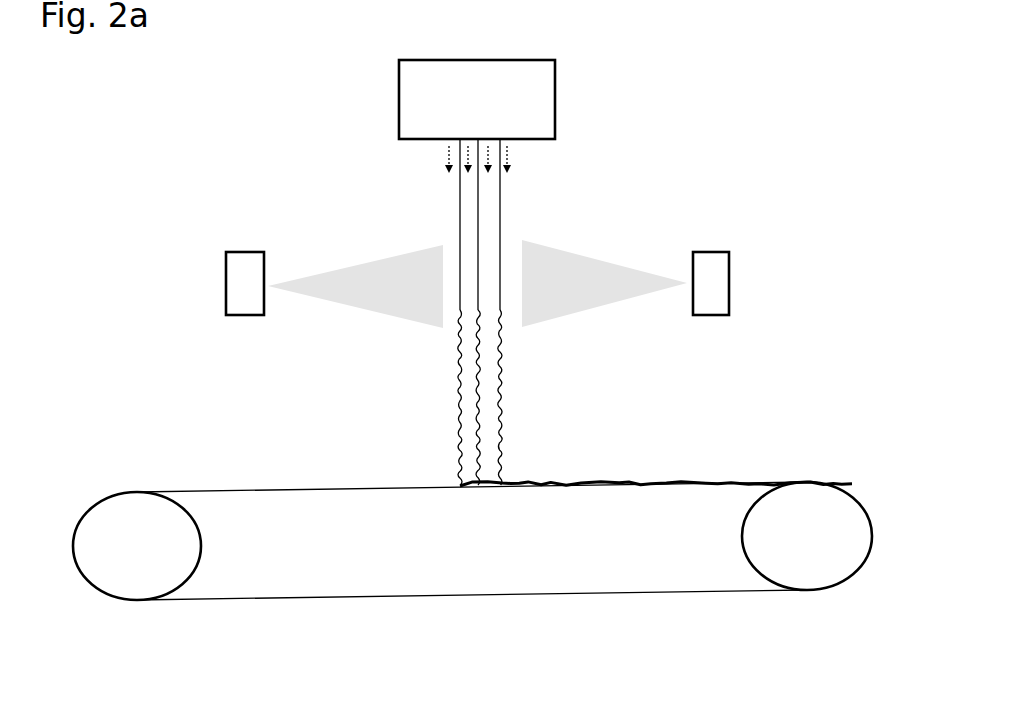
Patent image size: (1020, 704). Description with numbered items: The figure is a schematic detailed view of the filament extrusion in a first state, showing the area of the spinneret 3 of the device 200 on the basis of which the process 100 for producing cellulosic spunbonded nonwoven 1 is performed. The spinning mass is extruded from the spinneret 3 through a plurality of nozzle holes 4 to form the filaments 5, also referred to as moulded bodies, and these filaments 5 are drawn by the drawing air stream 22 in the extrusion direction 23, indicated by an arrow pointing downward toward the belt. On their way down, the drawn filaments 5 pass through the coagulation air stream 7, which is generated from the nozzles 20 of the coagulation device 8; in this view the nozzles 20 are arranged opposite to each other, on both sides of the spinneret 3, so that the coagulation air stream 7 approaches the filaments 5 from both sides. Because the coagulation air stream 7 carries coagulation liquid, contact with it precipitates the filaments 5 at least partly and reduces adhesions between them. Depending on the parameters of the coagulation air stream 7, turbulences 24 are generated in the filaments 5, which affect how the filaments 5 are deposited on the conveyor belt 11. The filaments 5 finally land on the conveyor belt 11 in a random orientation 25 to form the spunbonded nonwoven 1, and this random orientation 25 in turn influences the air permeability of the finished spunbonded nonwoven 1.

The spunbonded nonwoven 1 is at (840, 480).
The spinneret 3 is at (452, 99).
The nozzle holes 4 is at (437, 148).
The filaments 5 is at (498, 190).
The coagulation air stream 7 is at (358, 290).
The coagulation device 8 is at (240, 298).
The conveyor belt 11 is at (579, 563).
The nozzles 20 is at (245, 271).
The drawing air stream 22 is at (508, 153).
The extrusion direction 23 is at (401, 382).
The turbulences 24 is at (504, 384).
The random orientation 25 is at (511, 475).
The process 100 is at (738, 84).
The device 200 is at (781, 124).